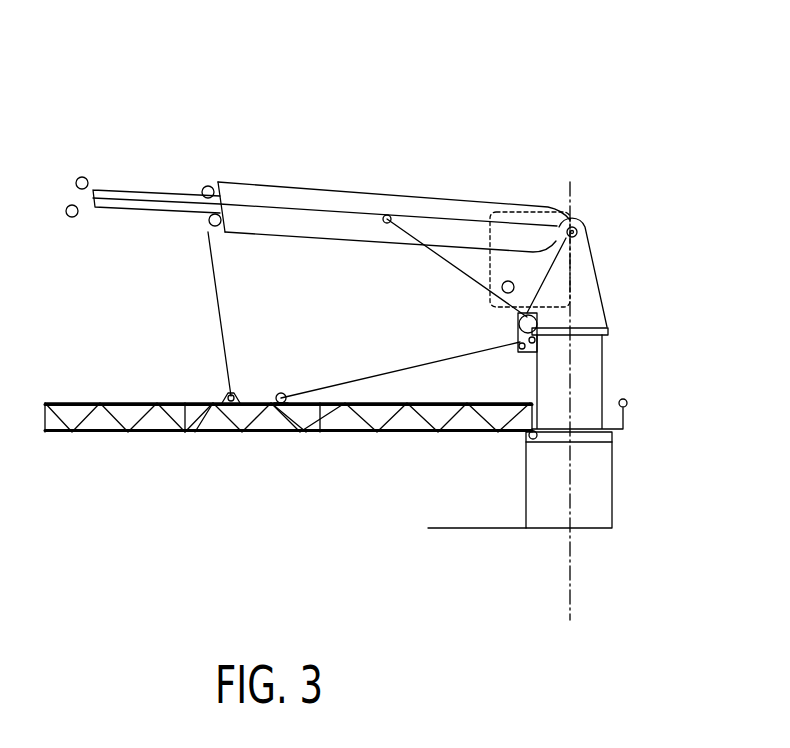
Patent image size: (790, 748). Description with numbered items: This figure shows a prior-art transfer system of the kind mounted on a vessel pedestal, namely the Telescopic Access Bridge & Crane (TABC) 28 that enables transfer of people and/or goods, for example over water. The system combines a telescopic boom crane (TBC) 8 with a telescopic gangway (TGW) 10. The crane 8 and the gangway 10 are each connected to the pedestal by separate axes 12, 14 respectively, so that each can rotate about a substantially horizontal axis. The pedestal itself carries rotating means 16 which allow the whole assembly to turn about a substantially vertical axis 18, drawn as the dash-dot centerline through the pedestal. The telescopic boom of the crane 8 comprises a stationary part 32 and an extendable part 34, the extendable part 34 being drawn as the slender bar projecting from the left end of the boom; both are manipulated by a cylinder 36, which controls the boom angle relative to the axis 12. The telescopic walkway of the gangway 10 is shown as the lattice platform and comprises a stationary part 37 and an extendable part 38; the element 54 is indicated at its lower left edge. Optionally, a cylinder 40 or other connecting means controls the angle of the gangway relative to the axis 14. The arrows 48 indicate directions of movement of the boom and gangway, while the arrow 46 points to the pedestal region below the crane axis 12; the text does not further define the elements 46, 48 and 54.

The telescopic boom crane 8 is at (336, 208).
The telescopic gangway 10 is at (288, 380).
The axis 12 is at (574, 229).
The axis 14 is at (530, 433).
The rotating means 16 is at (485, 565).
The vertical axis 18 is at (570, 595).
The telescopic access bridge and crane 28 is at (416, 130).
The stationary part 32 is at (313, 235).
The extendable part 34 is at (143, 192).
The cylinder 36 is at (445, 258).
The stationary part 37 is at (397, 434).
The extendable part 38 is at (108, 432).
The cylinder 40 is at (413, 372).
The column 46 is at (440, 500).
The movement direction 48 is at (135, 268).
The platform edge 54 is at (63, 434).